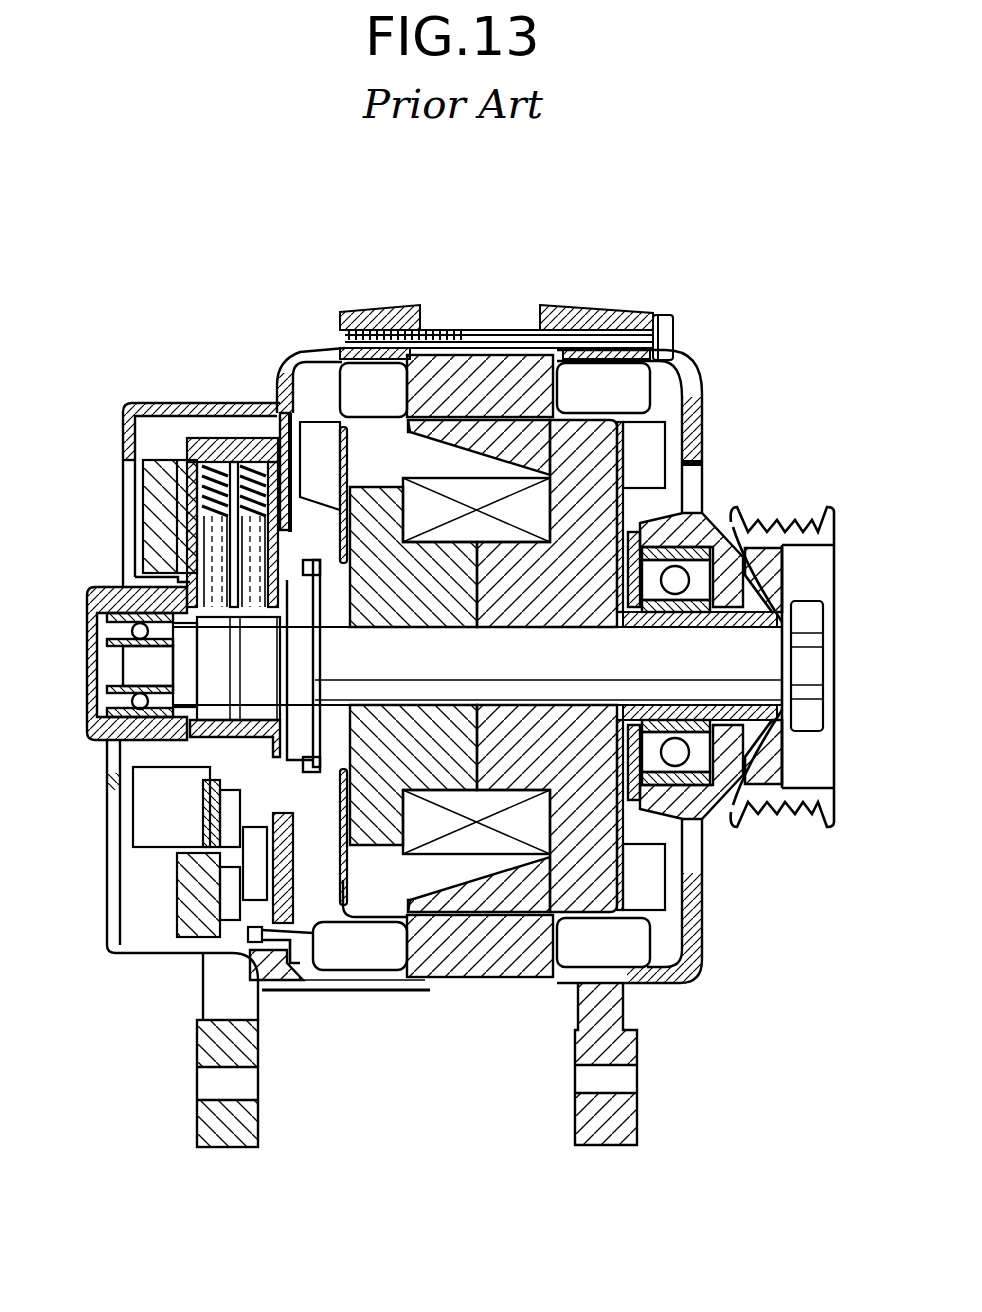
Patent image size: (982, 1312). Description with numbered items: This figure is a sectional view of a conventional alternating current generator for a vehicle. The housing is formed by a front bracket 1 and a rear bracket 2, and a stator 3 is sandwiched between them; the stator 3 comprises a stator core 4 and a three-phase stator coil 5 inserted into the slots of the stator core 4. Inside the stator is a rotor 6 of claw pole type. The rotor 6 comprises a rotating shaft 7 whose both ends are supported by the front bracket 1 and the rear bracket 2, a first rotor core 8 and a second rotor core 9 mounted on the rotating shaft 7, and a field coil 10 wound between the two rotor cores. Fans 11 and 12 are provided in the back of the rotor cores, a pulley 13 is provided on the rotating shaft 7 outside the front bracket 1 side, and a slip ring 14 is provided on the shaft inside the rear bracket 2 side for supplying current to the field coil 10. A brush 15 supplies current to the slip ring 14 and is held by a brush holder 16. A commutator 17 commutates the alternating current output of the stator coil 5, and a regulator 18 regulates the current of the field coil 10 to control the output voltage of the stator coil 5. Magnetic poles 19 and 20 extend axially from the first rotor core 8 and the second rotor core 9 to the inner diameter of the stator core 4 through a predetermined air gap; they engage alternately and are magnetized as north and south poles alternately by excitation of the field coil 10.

The front bracket 1 is at (700, 903).
The rear bracket 2 is at (150, 937).
The stator 3 is at (469, 352).
The stator core 4 is at (516, 372).
The stator coil 5 is at (408, 378).
The rotor 6 is at (602, 452).
The rotating shaft 7 is at (757, 658).
The first rotor core 8 is at (460, 772).
The second rotor core 9 is at (500, 775).
The field coil 10 is at (438, 852).
The fan 11 is at (312, 432).
The fan 12 is at (652, 454).
The pulley 13 is at (806, 556).
The slip ring 14 is at (253, 657).
The brush 15 is at (212, 522).
The brush holder 16 is at (245, 513).
The commutator 17 is at (232, 810).
The regulator 18 is at (182, 457).
The magnetic pole 19 is at (374, 900).
The magnetic pole 20 is at (527, 900).